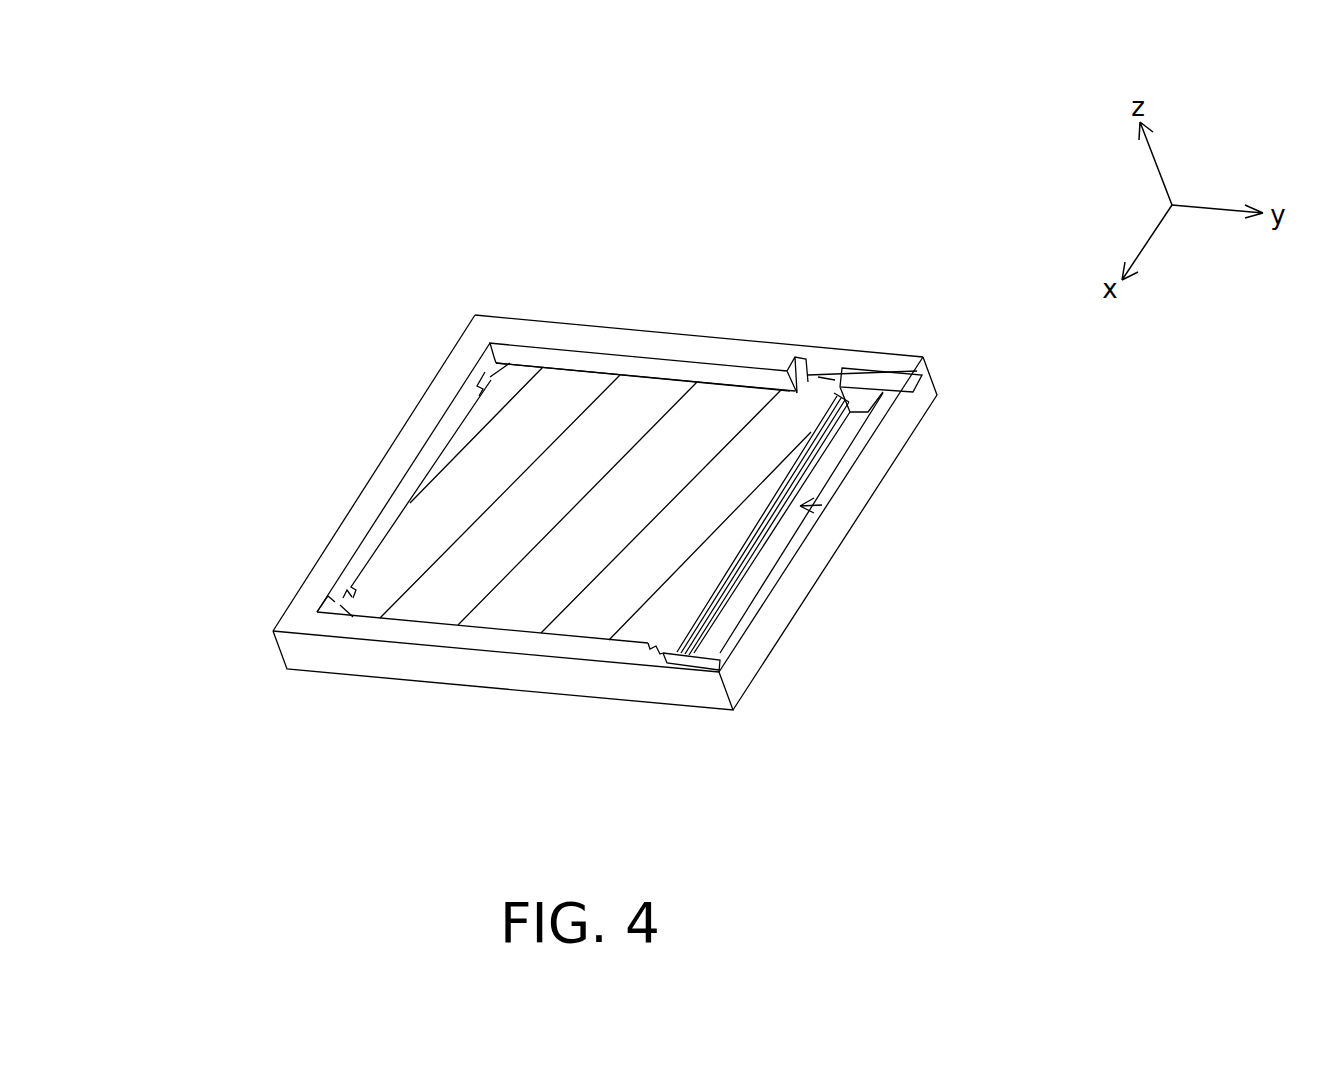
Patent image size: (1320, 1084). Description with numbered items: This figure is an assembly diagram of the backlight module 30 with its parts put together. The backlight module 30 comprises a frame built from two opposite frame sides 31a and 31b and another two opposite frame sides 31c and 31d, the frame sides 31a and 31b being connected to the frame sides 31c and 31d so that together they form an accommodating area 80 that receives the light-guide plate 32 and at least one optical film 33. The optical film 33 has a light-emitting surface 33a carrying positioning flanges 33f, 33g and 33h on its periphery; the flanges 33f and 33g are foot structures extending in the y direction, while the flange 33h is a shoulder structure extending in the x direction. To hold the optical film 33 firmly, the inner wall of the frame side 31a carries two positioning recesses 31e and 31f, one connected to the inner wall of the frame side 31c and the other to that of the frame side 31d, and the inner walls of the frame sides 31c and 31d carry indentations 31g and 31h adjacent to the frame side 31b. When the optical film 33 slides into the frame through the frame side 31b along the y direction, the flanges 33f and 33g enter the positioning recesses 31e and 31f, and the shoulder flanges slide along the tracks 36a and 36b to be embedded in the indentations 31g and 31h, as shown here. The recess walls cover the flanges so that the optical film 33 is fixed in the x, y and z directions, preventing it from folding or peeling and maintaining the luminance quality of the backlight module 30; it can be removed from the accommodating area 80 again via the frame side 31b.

The backlight module 30 is at (1164, 421).
The frame side 31a is at (402, 453).
The frame side 31b is at (830, 542).
The frame side 31c is at (690, 337).
The frame side 31d is at (475, 668).
The positioning recess 31e is at (483, 356).
The positioning recess 31f is at (334, 582).
The indentation 31g is at (820, 368).
The indentation 31h is at (655, 670).
The light-guide plate 32 is at (753, 552).
The optical film 33 is at (580, 462).
The light-emitting surface 33a is at (657, 395).
The positioning flange 33f is at (510, 357).
The positioning flange 33g is at (340, 605).
The positioning flange 33h is at (828, 385).
The track 36a is at (900, 383).
The track 36b is at (737, 655).
The accommodating area 80 is at (822, 505).